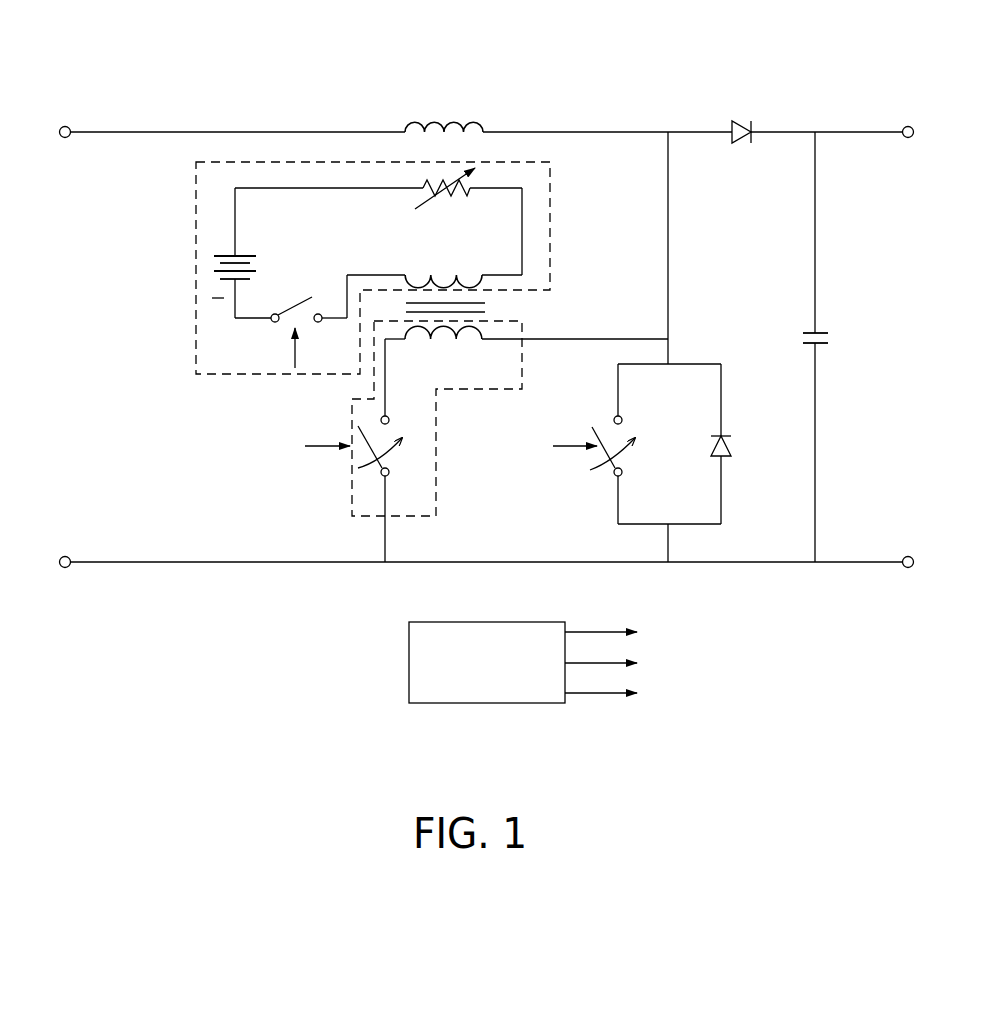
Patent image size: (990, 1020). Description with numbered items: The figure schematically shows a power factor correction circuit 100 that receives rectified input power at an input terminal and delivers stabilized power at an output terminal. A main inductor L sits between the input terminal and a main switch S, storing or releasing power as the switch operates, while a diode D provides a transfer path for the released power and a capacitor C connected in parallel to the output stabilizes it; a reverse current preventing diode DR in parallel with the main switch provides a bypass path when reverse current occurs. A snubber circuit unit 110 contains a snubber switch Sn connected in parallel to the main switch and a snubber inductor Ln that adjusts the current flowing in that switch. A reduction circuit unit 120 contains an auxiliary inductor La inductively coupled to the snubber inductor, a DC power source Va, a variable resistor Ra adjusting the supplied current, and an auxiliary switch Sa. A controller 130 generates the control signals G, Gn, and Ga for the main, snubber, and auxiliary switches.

The power factor correction circuit 100 is at (549, 30).
The snubber circuit unit 110 is at (523, 326).
The reduction circuit unit 120 is at (549, 197).
The controller 130 is at (485, 703).